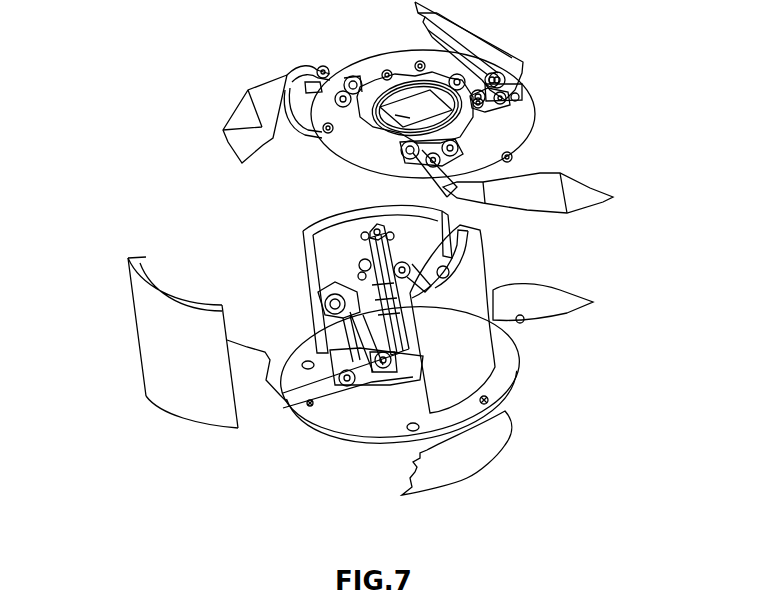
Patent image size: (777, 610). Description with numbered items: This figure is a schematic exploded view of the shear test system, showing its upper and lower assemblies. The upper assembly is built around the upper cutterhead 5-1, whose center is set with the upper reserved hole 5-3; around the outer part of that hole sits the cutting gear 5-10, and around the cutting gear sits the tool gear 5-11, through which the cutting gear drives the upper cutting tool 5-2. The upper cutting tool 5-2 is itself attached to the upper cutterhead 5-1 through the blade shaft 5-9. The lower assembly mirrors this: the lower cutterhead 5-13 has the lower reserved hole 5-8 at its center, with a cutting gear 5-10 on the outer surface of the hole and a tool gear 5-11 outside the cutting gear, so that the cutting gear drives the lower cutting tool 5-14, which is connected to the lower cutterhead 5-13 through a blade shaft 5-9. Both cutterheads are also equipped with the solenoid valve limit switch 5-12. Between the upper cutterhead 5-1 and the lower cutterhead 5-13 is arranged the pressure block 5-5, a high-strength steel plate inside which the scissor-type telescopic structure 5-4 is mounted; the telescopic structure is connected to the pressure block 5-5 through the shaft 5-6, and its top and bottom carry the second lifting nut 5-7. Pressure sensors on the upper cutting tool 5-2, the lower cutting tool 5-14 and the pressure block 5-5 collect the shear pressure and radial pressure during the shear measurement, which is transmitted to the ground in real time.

The upper cutterhead 5-1 is at (360, 73).
The upper cutting tool 5-2 is at (263, 107).
The upper reserved hole 5-3 is at (417, 122).
The scissor-type telescopic structure 5-4 is at (340, 320).
The pressure block 5-5 is at (168, 357).
The shaft 5-6 is at (350, 382).
The second lifting nut 5-7 is at (380, 380).
The lower reserved hole 5-8 is at (405, 388).
The blade shaft 5-9 is at (530, 63).
The cutting gear 5-10 is at (470, 113).
The tool gear 5-11 is at (465, 145).
The solenoid valve limit switch 5-12 is at (507, 157).
The lower cutterhead 5-13 is at (503, 370).
The lower cutting tool 5-14 is at (483, 438).